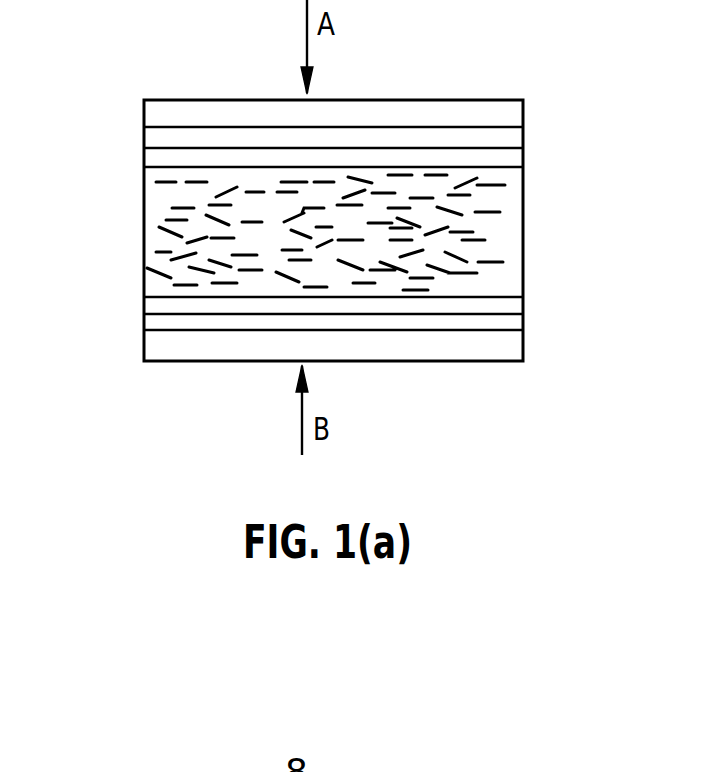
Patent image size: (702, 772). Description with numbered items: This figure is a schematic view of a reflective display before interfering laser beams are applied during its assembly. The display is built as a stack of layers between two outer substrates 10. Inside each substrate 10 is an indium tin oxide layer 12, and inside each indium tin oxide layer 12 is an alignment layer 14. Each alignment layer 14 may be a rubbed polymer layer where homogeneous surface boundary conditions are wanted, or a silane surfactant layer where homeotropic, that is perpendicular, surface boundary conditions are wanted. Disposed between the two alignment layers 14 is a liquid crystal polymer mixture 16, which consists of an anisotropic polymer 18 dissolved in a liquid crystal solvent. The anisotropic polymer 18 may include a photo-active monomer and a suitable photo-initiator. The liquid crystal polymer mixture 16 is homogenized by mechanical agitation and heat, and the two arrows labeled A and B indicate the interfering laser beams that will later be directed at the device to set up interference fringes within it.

The substrate 10 is at (157, 108).
The indium tin oxide layer 12 is at (513, 136).
The alignment layer 14 is at (142, 157).
The liquid crystal polymer mixture 16 is at (152, 214).
The anisotropic polymer 18 is at (166, 253).